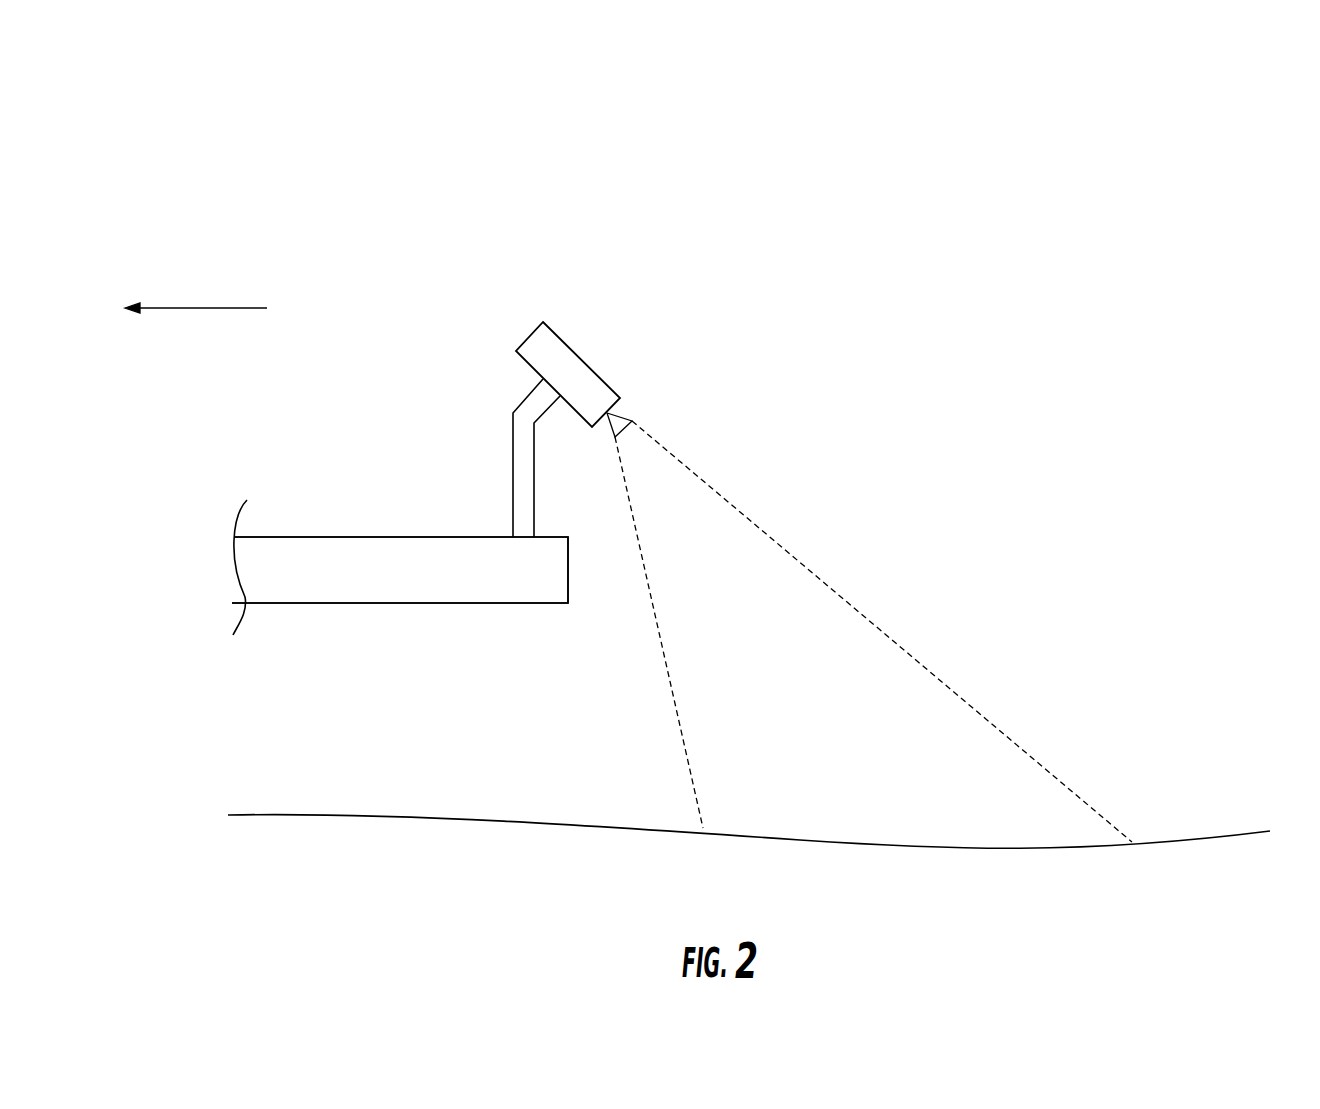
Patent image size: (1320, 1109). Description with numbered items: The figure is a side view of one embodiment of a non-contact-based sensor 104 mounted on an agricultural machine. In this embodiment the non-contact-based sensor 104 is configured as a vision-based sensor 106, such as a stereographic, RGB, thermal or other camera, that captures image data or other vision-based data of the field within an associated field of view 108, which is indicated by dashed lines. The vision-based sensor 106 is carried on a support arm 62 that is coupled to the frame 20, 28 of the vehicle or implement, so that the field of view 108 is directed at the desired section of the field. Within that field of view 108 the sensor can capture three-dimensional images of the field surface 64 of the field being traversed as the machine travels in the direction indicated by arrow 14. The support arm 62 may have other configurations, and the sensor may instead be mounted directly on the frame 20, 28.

The non-contact-based sensor 104 is at (265, 158).
The direction of travel 14 is at (198, 308).
The frame 20 is at (375, 537).
The frame 28 is at (400, 570).
The support arm 62 is at (512, 462).
The vision-based sensor 106 is at (585, 360).
The field of view 108 is at (668, 702).
The field surface 64 is at (1217, 840).